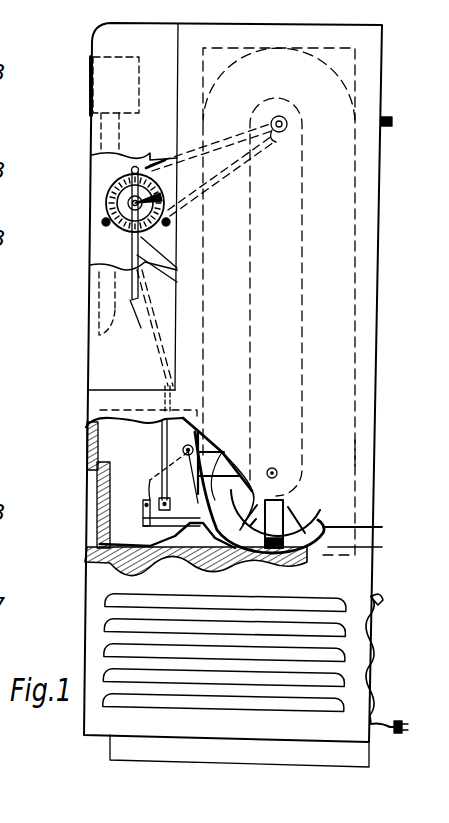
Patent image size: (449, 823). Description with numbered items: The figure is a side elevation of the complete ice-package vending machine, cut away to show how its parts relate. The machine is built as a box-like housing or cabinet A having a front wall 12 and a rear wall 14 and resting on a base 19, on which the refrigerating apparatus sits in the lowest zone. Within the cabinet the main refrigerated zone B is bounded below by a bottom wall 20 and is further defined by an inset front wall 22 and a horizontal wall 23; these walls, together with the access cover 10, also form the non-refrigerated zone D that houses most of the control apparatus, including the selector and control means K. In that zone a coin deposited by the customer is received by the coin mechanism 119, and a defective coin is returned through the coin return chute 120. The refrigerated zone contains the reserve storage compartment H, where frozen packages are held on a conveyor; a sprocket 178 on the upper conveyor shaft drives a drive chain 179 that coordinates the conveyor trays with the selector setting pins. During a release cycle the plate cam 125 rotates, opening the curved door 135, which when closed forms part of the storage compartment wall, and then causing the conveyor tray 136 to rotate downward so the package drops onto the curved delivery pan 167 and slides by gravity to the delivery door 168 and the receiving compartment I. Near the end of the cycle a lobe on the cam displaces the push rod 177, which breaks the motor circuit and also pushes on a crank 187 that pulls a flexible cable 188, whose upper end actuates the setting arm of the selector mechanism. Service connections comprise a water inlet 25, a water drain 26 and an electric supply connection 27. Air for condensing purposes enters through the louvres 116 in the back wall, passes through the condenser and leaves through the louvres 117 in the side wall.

The rear wall 14 is at (381, 346).
The base 19 is at (110, 747).
The access cover 10 is at (96, 372).
The non-refrigerated zone D is at (98, 173).
The coin mechanism 119 is at (139, 100).
The coin return chute 120 is at (101, 324).
The selector and control means K is at (106, 214).
The inset front wall 22 is at (170, 162).
The drive chain 179 is at (212, 173).
The horizontal wall 23 is at (142, 392).
The sprocket 178 is at (288, 138).
The reserve storage compartment H is at (350, 298).
The housing or cabinet A is at (357, 432).
The water inlet 25 is at (392, 122).
The front wall 12 is at (88, 424).
The receiving compartment I is at (103, 440).
The delivery door 168 is at (99, 504).
The main refrigerated zone B is at (256, 485).
The bottom wall 20 is at (373, 549).
The conveyor tray 136 is at (293, 507).
The curved door 135 is at (219, 477).
The flexible cable 188 is at (180, 449).
The push rod 177 is at (174, 473).
The crank 187 is at (150, 486).
The curved delivery pan 167 is at (150, 563).
The plate cam 125 is at (200, 563).
The louvres 117 is at (310, 608).
The louvres 116 is at (374, 636).
The water drain 26 is at (384, 599).
The electric supply connection 27 is at (392, 735).